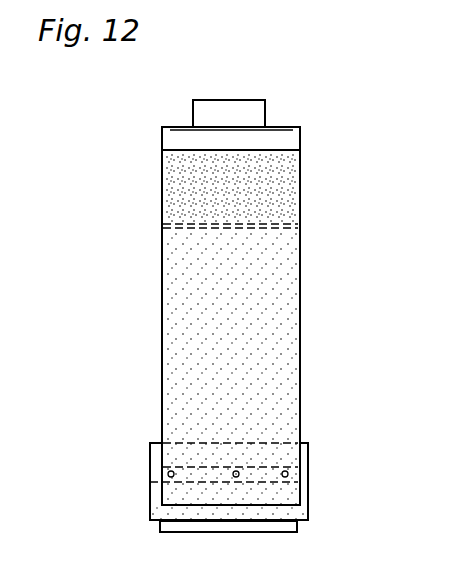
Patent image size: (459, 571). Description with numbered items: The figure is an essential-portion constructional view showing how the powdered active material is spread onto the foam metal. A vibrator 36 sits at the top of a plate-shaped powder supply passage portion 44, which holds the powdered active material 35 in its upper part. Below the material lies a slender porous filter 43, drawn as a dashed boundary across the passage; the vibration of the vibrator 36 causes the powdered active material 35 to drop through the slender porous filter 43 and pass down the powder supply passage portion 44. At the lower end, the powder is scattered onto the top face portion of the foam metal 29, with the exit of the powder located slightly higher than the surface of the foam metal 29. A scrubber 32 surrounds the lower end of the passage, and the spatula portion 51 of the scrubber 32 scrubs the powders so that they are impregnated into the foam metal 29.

The vibrator 36 is at (238, 100).
The plate-shaped powder supply passage portion 44 is at (272, 295).
The powdered active material 35 is at (192, 188).
The slender porous filter 43 is at (190, 228).
The spatula portion 51 is at (150, 508).
The scrubber 32 is at (162, 473).
The foam metal 29 is at (160, 526).